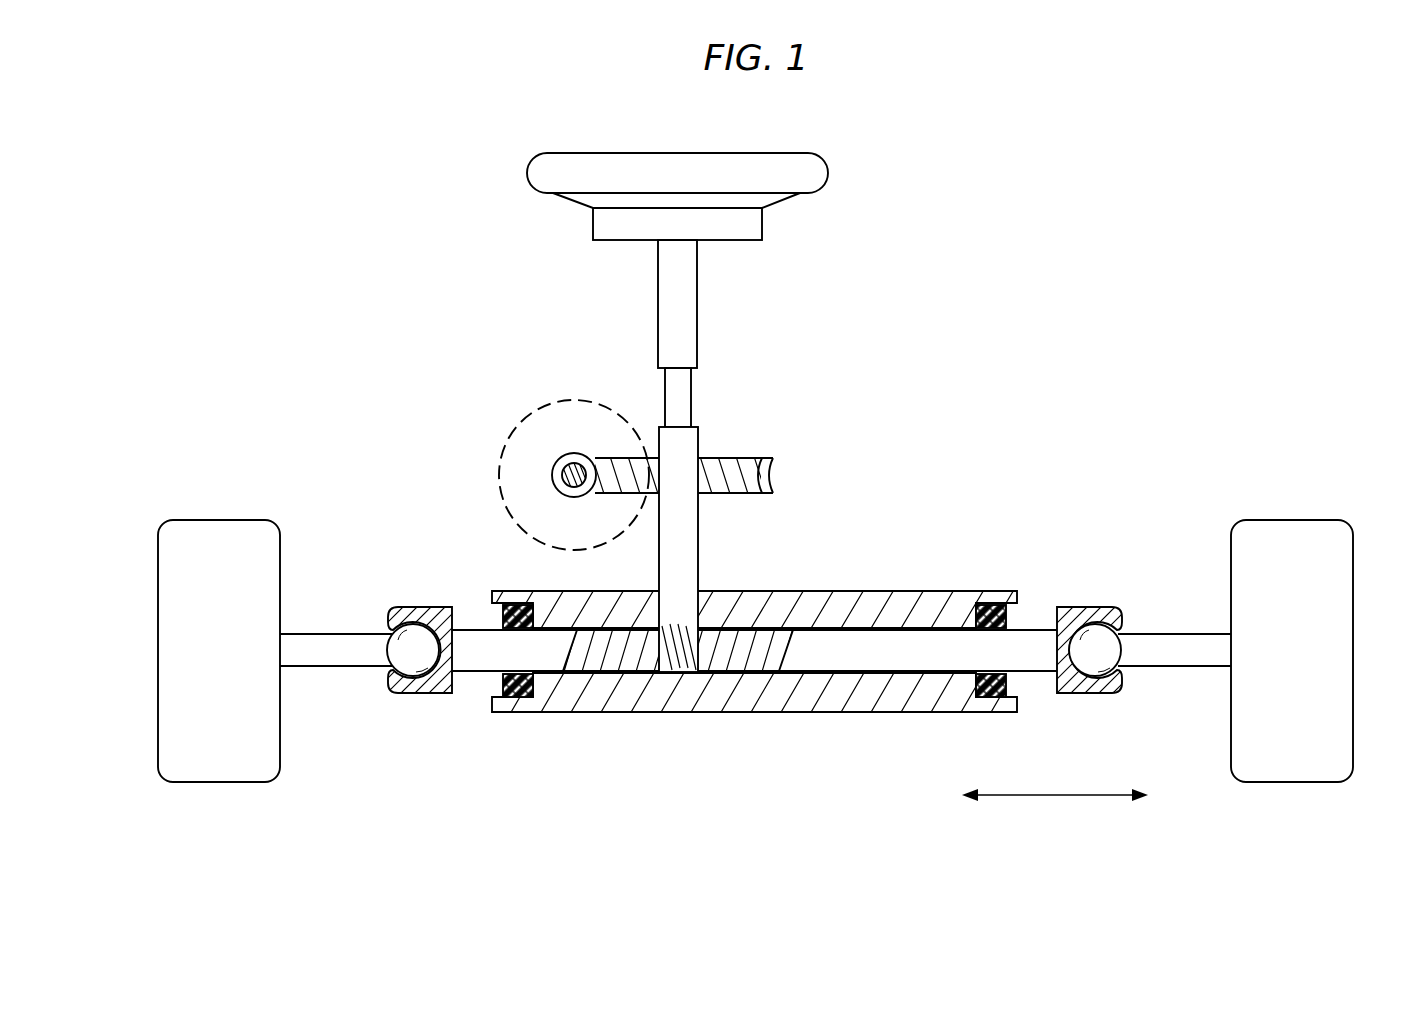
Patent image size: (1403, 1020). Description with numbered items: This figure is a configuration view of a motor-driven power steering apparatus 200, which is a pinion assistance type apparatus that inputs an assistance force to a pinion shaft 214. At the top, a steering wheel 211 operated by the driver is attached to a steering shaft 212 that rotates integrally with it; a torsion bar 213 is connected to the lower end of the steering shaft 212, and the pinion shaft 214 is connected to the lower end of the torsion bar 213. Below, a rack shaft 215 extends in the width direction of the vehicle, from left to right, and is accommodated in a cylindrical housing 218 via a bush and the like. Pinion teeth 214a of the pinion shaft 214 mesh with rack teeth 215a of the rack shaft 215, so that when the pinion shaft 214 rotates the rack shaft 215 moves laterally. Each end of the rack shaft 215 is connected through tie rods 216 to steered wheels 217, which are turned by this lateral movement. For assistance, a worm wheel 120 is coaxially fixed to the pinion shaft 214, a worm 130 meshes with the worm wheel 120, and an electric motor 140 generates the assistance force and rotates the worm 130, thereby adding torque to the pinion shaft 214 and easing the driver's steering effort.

The motor-driven power steering apparatus 200 is at (450, 243).
The steering wheel 211 is at (828, 172).
The steering shaft 212 is at (697, 297).
The torsion bar 213 is at (691, 394).
The pinion shaft 214 is at (714, 594).
The pinion teeth 214a is at (673, 674).
The rack shaft 215 is at (754, 698).
The rack teeth 215a is at (626, 662).
The tie rods 216 is at (326, 634).
The steered wheels 217 is at (218, 520).
The cylindrical housing 218 is at (875, 588).
The worm wheel 120 is at (773, 473).
The worm 130 is at (552, 470).
The electric motor 140 is at (499, 492).